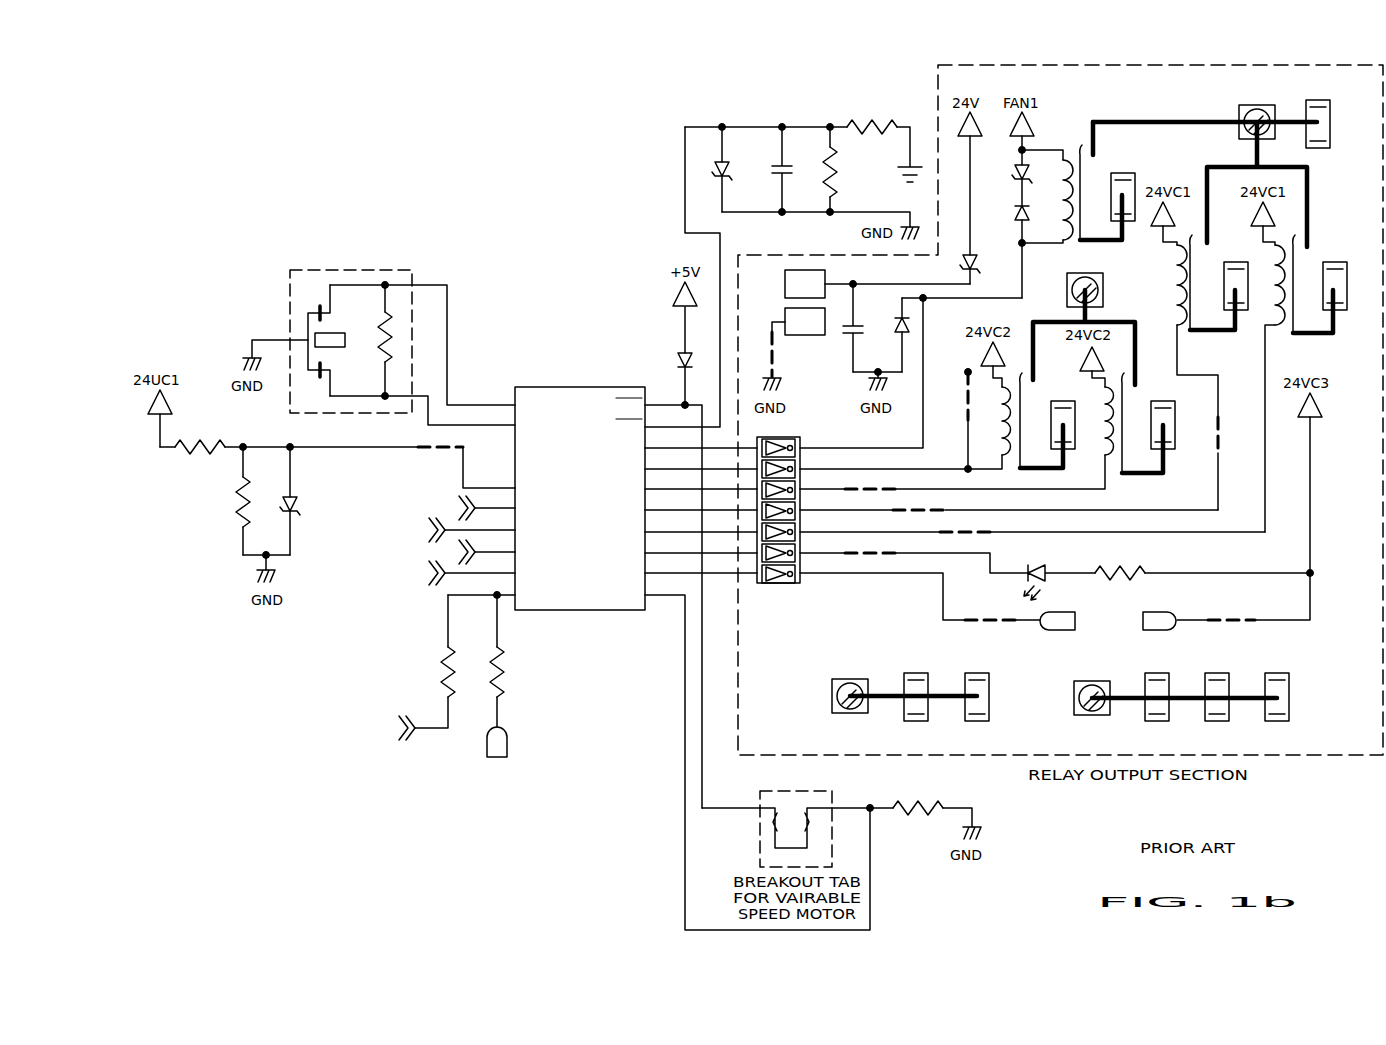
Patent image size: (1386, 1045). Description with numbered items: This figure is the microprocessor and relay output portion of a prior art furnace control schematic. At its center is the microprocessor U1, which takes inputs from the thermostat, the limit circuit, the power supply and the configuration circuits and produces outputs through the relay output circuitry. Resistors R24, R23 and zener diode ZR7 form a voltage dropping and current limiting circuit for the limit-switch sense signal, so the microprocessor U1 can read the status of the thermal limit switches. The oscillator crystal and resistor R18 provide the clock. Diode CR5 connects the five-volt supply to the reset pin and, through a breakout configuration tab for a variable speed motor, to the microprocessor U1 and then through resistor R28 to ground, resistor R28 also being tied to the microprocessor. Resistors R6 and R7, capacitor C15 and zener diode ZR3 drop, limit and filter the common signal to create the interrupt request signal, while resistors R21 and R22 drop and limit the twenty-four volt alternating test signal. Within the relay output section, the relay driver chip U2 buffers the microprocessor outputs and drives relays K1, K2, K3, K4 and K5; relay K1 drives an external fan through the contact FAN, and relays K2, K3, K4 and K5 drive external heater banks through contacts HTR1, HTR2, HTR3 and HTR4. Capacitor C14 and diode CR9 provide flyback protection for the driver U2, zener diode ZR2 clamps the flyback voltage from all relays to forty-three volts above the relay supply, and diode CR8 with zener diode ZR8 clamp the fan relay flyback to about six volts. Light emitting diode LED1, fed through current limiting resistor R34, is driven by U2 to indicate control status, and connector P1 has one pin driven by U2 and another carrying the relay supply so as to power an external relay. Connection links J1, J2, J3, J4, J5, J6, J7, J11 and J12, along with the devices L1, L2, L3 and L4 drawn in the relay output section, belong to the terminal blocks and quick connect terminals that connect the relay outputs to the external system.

The resistor R24 is at (201, 439).
The resistor R23 is at (225, 501).
The zener diode ZR7 is at (305, 501).
The resistor R18 is at (371, 340).
The microprocessor U1 is at (585, 498).
The resistor R22 is at (427, 667).
The resistor R21 is at (517, 676).
The diode CR5 is at (664, 356).
The resistor R6 is at (876, 142).
The zener diode ZR3 is at (733, 169).
The capacitor C15 is at (769, 169).
The resistor R7 is at (841, 169).
The connector J1 is at (787, 323).
The capacitor C14 is at (864, 328).
The diode CR9 is at (887, 335).
The zener diode ZR2 is at (983, 213).
The zener diode ZR8 is at (1006, 171).
The diode CR8 is at (1004, 214).
The relay K1 is at (1047, 196).
The fan relay contact FAN is at (1107, 181).
The indicator lamp L4 is at (1211, 166).
The relay K2 is at (1184, 321).
The jumper J11 is at (1233, 463).
The heater relay contact HTR4 is at (1220, 282).
The relay K3 is at (1270, 379).
The heater relay contact HTR3 is at (1324, 284).
The indicator lamp L1 is at (1084, 319).
The relay K4 is at (989, 417).
The jumper J12 is at (952, 420).
The heater relay contact HTR2 is at (1050, 420).
The relay K5 is at (1004, 430).
The heater relay contact HTR1 is at (1151, 423).
The jumper J7 is at (870, 480).
The jumper J6 is at (919, 501).
The jumper J5 is at (965, 523).
The jumper J4 is at (870, 544).
The light emitting diode LED1 is at (1052, 574).
The resistor R34 is at (1202, 564).
The jumper J2 is at (1231, 607).
The jumper J3 is at (990, 608).
The connector P1 is at (1108, 621).
The relay driver chip U2 is at (778, 523).
The indicator lamp L2 is at (897, 697).
The indicator lamp L3 is at (1168, 697).
The resistor R28 is at (921, 806).